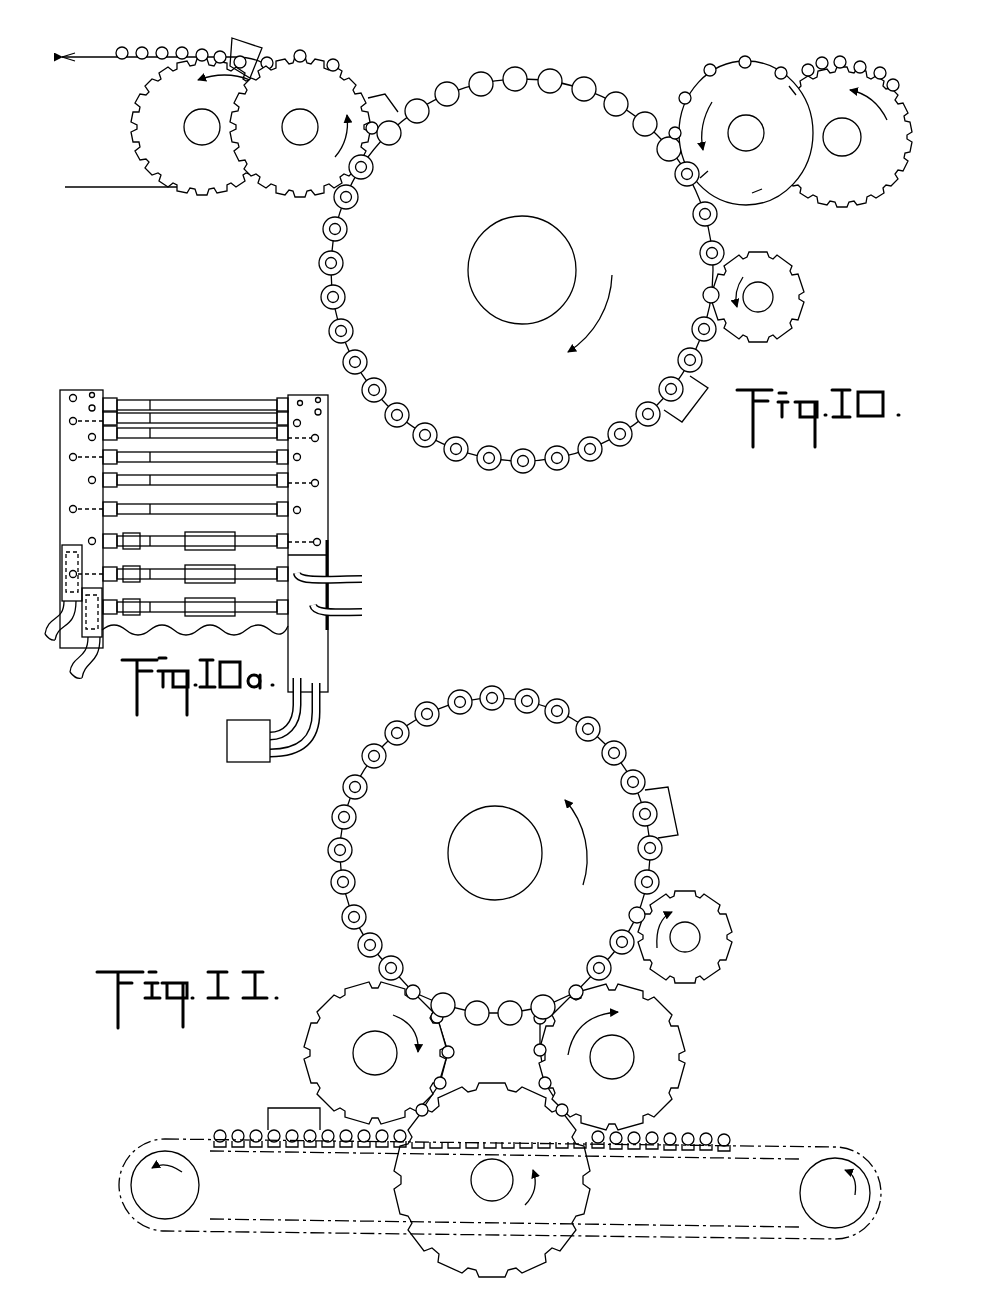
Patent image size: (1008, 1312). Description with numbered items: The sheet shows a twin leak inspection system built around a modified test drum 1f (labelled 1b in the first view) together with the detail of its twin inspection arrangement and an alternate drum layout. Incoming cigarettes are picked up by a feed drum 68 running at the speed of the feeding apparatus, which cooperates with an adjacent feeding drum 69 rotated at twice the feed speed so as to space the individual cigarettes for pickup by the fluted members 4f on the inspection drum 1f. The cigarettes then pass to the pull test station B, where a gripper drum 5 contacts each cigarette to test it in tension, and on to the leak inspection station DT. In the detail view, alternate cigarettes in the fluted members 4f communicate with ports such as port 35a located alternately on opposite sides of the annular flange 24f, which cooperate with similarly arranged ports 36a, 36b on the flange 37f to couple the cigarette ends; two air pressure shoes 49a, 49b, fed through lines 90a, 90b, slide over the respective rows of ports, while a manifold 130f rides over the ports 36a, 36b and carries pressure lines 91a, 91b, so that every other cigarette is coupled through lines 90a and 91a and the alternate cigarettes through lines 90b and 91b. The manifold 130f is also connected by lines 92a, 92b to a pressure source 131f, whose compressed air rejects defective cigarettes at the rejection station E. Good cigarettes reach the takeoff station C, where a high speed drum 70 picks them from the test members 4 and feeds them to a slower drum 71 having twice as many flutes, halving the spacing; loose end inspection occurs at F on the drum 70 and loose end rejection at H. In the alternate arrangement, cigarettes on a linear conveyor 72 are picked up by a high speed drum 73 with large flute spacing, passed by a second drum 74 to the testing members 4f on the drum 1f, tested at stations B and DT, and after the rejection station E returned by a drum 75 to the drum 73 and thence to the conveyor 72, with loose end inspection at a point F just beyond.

In FIG. 10, the drum 1b is at (540, 167).
In FIG. 10A, the twin inspection drum 1f is at (329, 498).
In FIG. 11, the twin inspection drum 1f is at (510, 779).
In FIG. 10, the test members 4 is at (556, 78).
In FIG. 10A, the fluted members 4f is at (200, 628).
In FIG. 11, the fluted members 4f is at (626, 760).
In FIG. 10, the gripper drum 5 is at (787, 285).
In FIG. 11, the gripper drum 5 is at (708, 912).
In FIG. 10A, the annular flange 24f is at (60, 400).
In FIG. 10A, the port 35a is at (73, 462).
In FIG. 10A, the port 36a is at (329, 460).
In FIG. 10A, the port 36b is at (329, 527).
In FIG. 10A, the flange 37f is at (300, 395).
In FIG. 10A, the air pressure shoe 49a is at (68, 530).
In FIG. 10A, the air pressure shoe 49b is at (62, 565).
In FIG. 10, the feed drum 68 is at (862, 78).
In FIG. 10, the feeding drum 69 is at (757, 77).
In FIG. 10, the drum 70 is at (345, 85).
In FIG. 10, the drum 71 is at (258, 62).
In FIG. 11, the linear conveyor 72 is at (778, 1146).
In FIG. 11, the high speed drum 73 is at (515, 1256).
In FIG. 11, the second drum 74 is at (665, 1036).
In FIG. 11, the drum 75 is at (348, 990).
In FIG. 10A, the line 90a is at (48, 642).
In FIG. 10A, the line 90b is at (80, 676).
In FIG. 10A, the pressure line 91a is at (362, 579).
In FIG. 10A, the pressure line 91b is at (362, 612).
In FIG. 10A, the line 92a is at (290, 700).
In FIG. 10A, the line 92b is at (322, 703).
In FIG. 10A, the manifold 130f is at (322, 572).
In FIG. 10A, the pressure source 131f is at (262, 750).
In FIG. 10, the pull test station B is at (700, 295).
In FIG. 11, the pull test station B is at (624, 916).
In FIG. 10, the takeoff station C is at (378, 170).
In FIG. 11, the takeoff station C is at (427, 986).
In FIG. 10, the leak inspection station DT is at (688, 426).
In FIG. 11, the leak inspection station DT is at (694, 814).
In FIG. 10, the rejection station E is at (538, 445).
In FIG. 11, the rejection station E is at (541, 684).
In FIG. 10, the loose end inspection point F is at (397, 92).
In FIG. 11, the loose end inspection point F is at (272, 1104).
In FIG. 10, the loose end rejection point H is at (226, 46).
In FIG. 11, the loose end rejection point H is at (205, 1116).